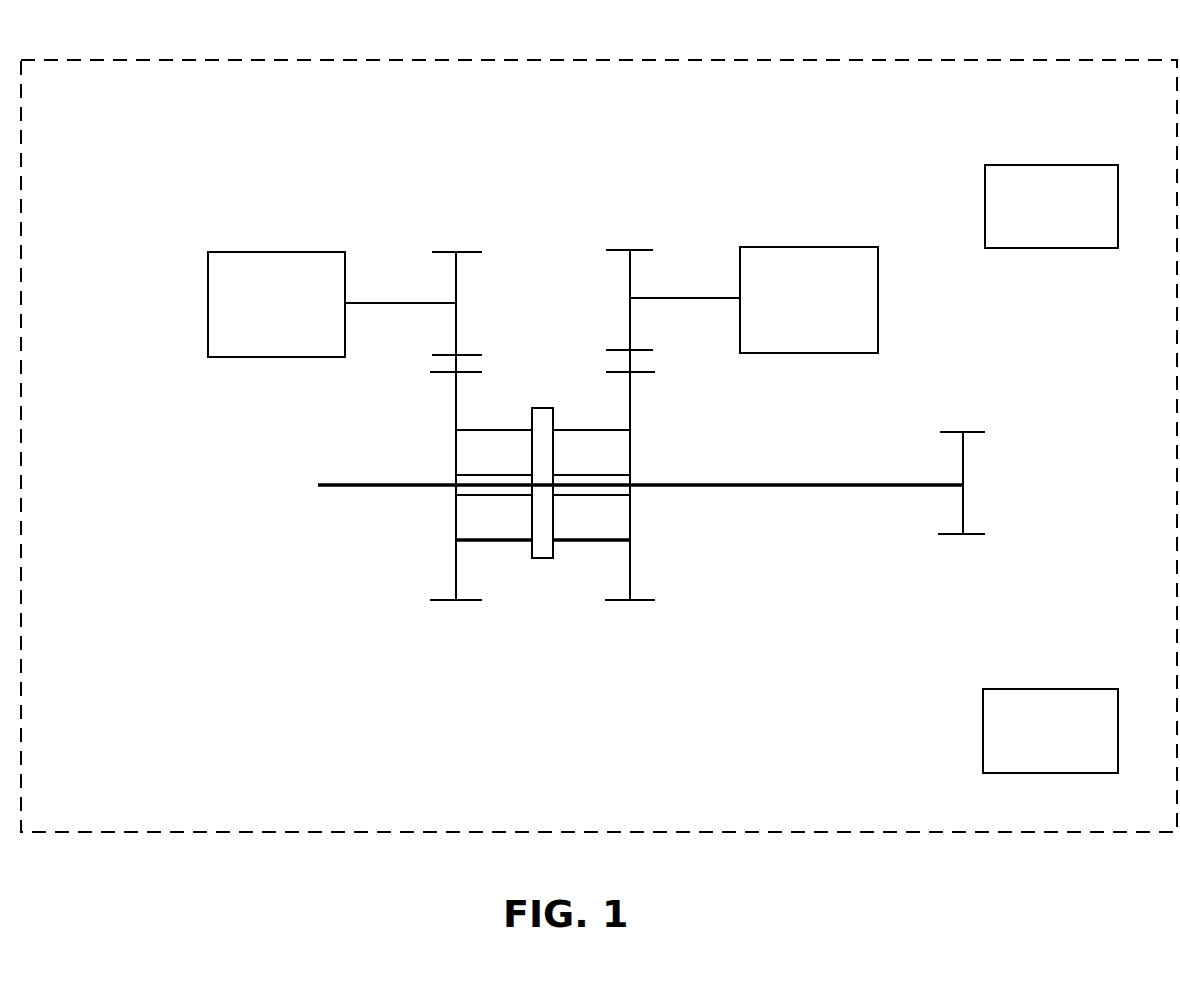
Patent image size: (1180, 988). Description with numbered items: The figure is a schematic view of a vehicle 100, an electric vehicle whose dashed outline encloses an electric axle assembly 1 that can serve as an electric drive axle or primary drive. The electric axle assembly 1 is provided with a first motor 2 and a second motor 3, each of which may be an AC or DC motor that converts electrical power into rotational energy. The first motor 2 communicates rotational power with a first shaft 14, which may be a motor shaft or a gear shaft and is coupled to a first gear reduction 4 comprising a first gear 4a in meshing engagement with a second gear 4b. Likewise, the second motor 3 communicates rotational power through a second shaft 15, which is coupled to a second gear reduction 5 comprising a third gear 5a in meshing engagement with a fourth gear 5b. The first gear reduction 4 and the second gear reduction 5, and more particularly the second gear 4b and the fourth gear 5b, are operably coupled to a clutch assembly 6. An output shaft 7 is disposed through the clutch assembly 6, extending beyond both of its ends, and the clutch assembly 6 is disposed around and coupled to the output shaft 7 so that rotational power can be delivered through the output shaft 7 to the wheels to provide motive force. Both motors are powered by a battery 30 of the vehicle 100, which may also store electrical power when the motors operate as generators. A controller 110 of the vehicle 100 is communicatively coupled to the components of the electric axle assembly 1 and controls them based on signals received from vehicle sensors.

The electric axle assembly 1 is at (289, 158).
The first motor 2 is at (255, 252).
The second motor 3 is at (775, 247).
The first gear reduction 4 is at (328, 409).
The first gear 4a is at (438, 250).
The second gear 4b is at (456, 578).
The second gear reduction 5 is at (708, 425).
The third gear 5a is at (628, 250).
The fourth gear 5b is at (630, 575).
The clutch assembly 6 is at (563, 636).
The output shaft 7 is at (813, 486).
The first shaft 14 is at (418, 302).
The second shaft 15 is at (660, 298).
The battery 30 is at (1070, 165).
The vehicle 100 is at (905, 60).
The controller 110 is at (1070, 688).